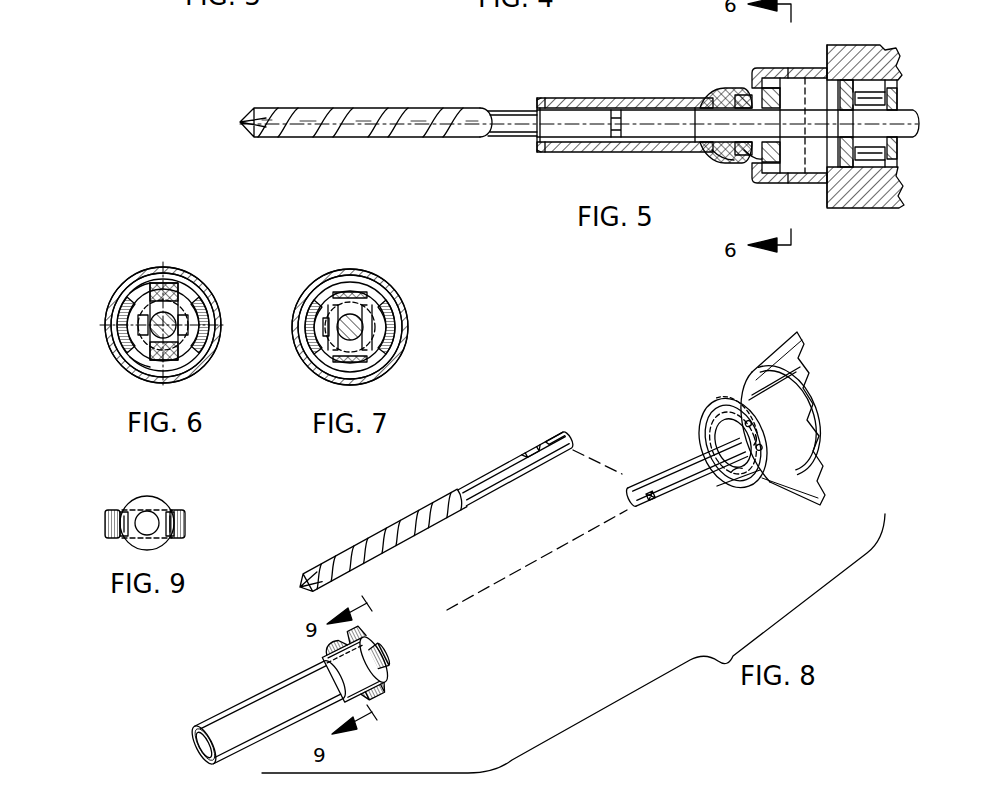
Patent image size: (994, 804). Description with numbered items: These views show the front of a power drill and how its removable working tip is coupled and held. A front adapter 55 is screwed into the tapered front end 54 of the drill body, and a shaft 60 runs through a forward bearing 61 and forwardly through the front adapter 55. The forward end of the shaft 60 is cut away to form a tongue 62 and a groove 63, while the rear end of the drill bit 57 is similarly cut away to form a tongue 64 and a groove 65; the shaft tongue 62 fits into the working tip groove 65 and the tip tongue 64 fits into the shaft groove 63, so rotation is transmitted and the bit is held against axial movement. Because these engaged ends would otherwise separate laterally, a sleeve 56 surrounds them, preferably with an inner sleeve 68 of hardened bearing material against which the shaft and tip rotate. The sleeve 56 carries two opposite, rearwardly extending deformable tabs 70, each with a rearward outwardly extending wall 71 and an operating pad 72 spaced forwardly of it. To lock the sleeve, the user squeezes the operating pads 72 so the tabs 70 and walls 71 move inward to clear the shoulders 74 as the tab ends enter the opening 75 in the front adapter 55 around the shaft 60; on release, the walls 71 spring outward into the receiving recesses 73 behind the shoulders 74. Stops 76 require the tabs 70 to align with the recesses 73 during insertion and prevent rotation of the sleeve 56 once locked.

In FIG. 5, the tapered front end 54 is at (878, 202).
In FIG. 8, the tapered front end 54 is at (817, 505).
In FIG. 5, the front adapter 55 is at (775, 70).
In FIG. 6, the front adapter 55 is at (197, 292).
In FIG. 7, the front adapter 55 is at (407, 338).
In FIG. 8, the front adapter 55 is at (725, 391).
In FIG. 5, the sleeve 56 is at (573, 97).
In FIG. 9, the sleeve 56 is at (150, 500).
In FIG. 8, the sleeve 56 is at (252, 700).
In FIG. 5, the drill bit 57 is at (337, 109).
In FIG. 8, the drill bit 57 is at (490, 470).
In FIG. 5, the shaft 60 is at (710, 118).
In FIG. 6, the shaft 60 is at (177, 320).
In FIG. 7, the shaft 60 is at (342, 336).
In FIG. 8, the shaft 60 is at (677, 464).
In FIG. 5, the forward bearing 61 is at (845, 97).
In FIG. 8, the tongue 62 is at (640, 507).
In FIG. 8, the groove 63 is at (658, 501).
In FIG. 8, the tongue 64 is at (567, 440).
In FIG. 8, the groove 65 is at (543, 437).
In FIG. 5, the inner sleeve 68 is at (556, 153).
In FIG. 8, the inner sleeve 68 is at (188, 739).
In FIG. 5, the tabs 70 is at (740, 97).
In FIG. 6, the tabs 70 is at (165, 303).
In FIG. 9, the tabs 70 is at (121, 539).
In FIG. 8, the tabs 70 is at (320, 708).
In FIG. 5, the walls 71 is at (772, 165).
In FIG. 6, the walls 71 is at (150, 283).
In FIG. 9, the walls 71 is at (107, 520).
In FIG. 8, the walls 71 is at (350, 634).
In FIG. 5, the operating pads 72 is at (722, 159).
In FIG. 8, the operating pads 72 is at (313, 658).
In FIG. 5, the receiving recesses 73 is at (792, 186).
In FIG. 7, the receiving recesses 73 is at (360, 298).
In FIG. 8, the receiving recesses 73 is at (773, 442).
In FIG. 5, the shoulders 74 is at (757, 158).
In FIG. 8, the shoulders 74 is at (777, 453).
In FIG. 5, the opening 75 is at (746, 96).
In FIG. 8, the opening 75 is at (737, 471).
In FIG. 6, the stops 76 is at (225, 327).
In FIG. 7, the stops 76 is at (236, 327).